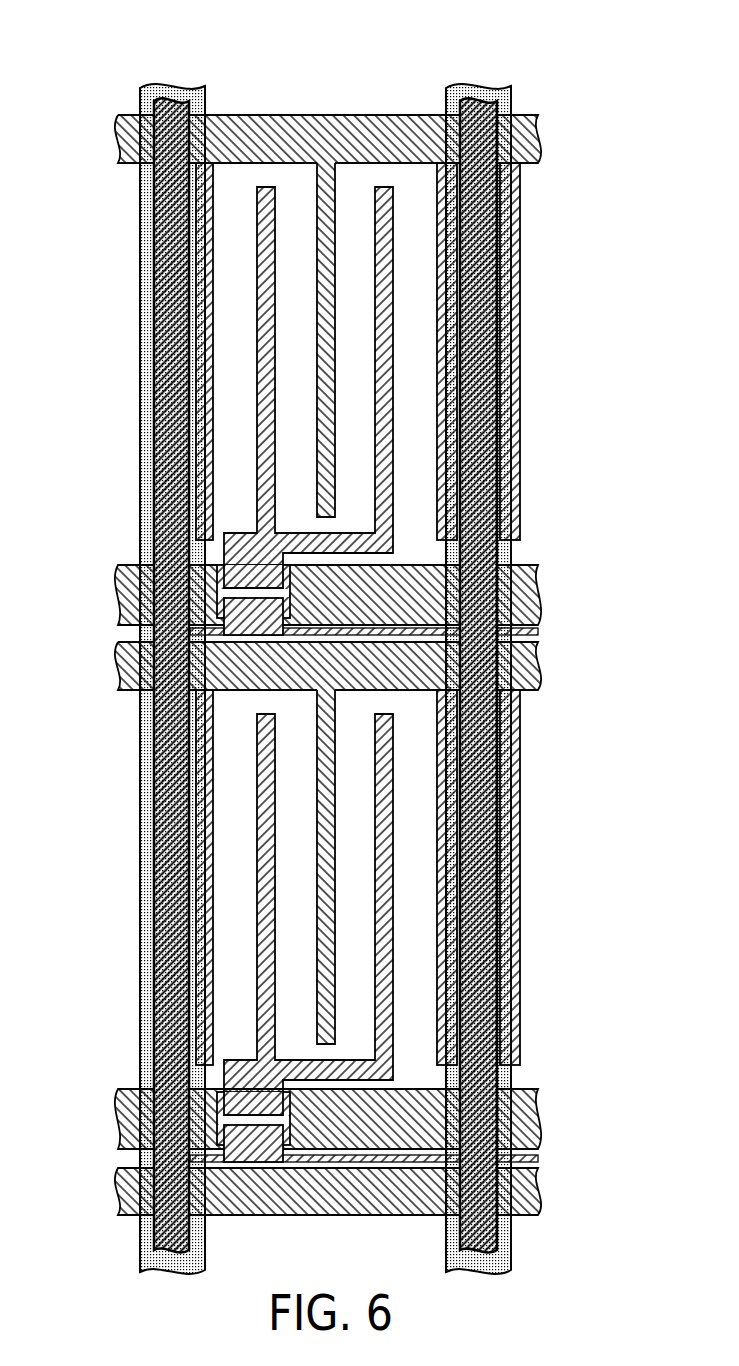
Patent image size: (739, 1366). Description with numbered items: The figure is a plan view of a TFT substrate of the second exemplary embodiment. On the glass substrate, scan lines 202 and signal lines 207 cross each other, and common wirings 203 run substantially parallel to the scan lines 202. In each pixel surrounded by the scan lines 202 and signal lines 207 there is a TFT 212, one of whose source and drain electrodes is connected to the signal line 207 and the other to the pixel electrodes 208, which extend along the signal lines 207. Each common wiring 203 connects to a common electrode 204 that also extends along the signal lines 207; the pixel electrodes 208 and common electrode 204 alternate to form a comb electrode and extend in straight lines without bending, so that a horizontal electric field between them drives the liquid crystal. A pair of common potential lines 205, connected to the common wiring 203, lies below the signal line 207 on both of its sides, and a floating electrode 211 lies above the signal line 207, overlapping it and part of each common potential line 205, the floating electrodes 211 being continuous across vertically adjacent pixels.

The scan line 202 is at (538, 590).
The common wiring 203 is at (538, 137).
The common electrode 204 is at (334, 387).
The common potential line 205 is at (210, 352).
The signal line 207 is at (180, 100).
The pixel electrode 208 is at (257, 225).
The floating electrode 211 is at (148, 302).
The TFT 212 is at (205, 612).